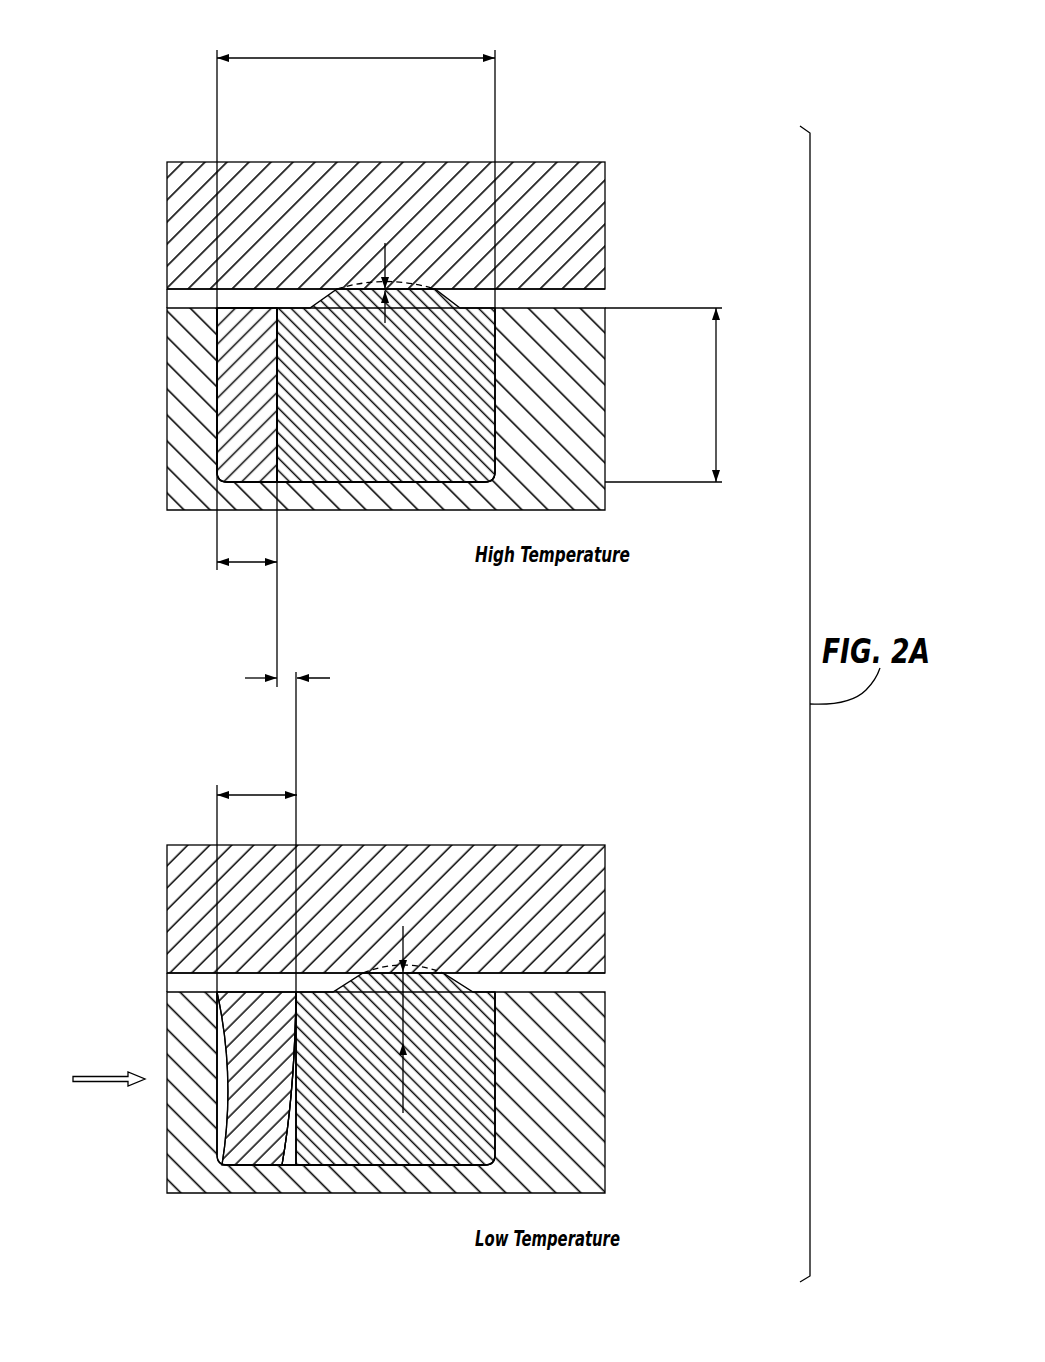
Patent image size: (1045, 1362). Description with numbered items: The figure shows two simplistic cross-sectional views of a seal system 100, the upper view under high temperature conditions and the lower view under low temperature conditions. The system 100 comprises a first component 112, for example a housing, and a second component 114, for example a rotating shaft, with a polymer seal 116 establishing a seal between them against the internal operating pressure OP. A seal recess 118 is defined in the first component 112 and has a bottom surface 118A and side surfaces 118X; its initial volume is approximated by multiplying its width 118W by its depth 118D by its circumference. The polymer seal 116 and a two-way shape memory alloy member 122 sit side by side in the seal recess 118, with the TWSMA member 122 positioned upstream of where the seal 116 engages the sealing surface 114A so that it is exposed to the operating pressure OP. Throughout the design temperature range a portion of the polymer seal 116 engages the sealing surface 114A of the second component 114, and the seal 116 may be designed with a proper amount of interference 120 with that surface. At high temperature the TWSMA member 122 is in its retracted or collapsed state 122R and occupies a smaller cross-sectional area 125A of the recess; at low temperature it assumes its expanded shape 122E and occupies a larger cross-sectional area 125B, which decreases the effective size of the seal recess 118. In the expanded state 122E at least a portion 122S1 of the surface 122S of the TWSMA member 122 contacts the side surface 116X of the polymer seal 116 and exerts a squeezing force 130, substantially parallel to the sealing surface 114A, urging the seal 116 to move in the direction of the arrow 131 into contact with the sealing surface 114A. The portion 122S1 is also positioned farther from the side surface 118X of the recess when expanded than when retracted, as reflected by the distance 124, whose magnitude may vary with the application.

The system 100 is at (150, 180).
The first component 112 is at (593, 402).
The second component 114 is at (593, 200).
The sealing surface 114A is at (540, 290).
The polymer seal 116 is at (468, 357).
The side surface of the polymer seal 116X is at (282, 392).
The seal recess 118 is at (401, 480).
The bottom surface 118A is at (353, 480).
The width of the seal recess 118W is at (328, 58).
The depth of the seal recess 118D is at (718, 417).
The side surface of the seal recess 118X is at (214, 384).
The interference 120 is at (385, 243).
The two-way shape memory alloy member 122 is at (222, 400).
The retracted or collapsed shape or state 122R is at (232, 352).
The surface of the TWSMA member 122S is at (277, 453).
The portion of the surface of the TWSMA member 122S1 is at (291, 1086).
The expanded shape or size 122E is at (245, 1030).
The distance 124 is at (286, 678).
The smaller cross-sectional area 125A is at (247, 566).
The larger cross-sectional area 125B is at (257, 793).
The force 130 is at (92, 1084).
The arrow 131 is at (398, 1085).
The operating pressure OP is at (212, 302).